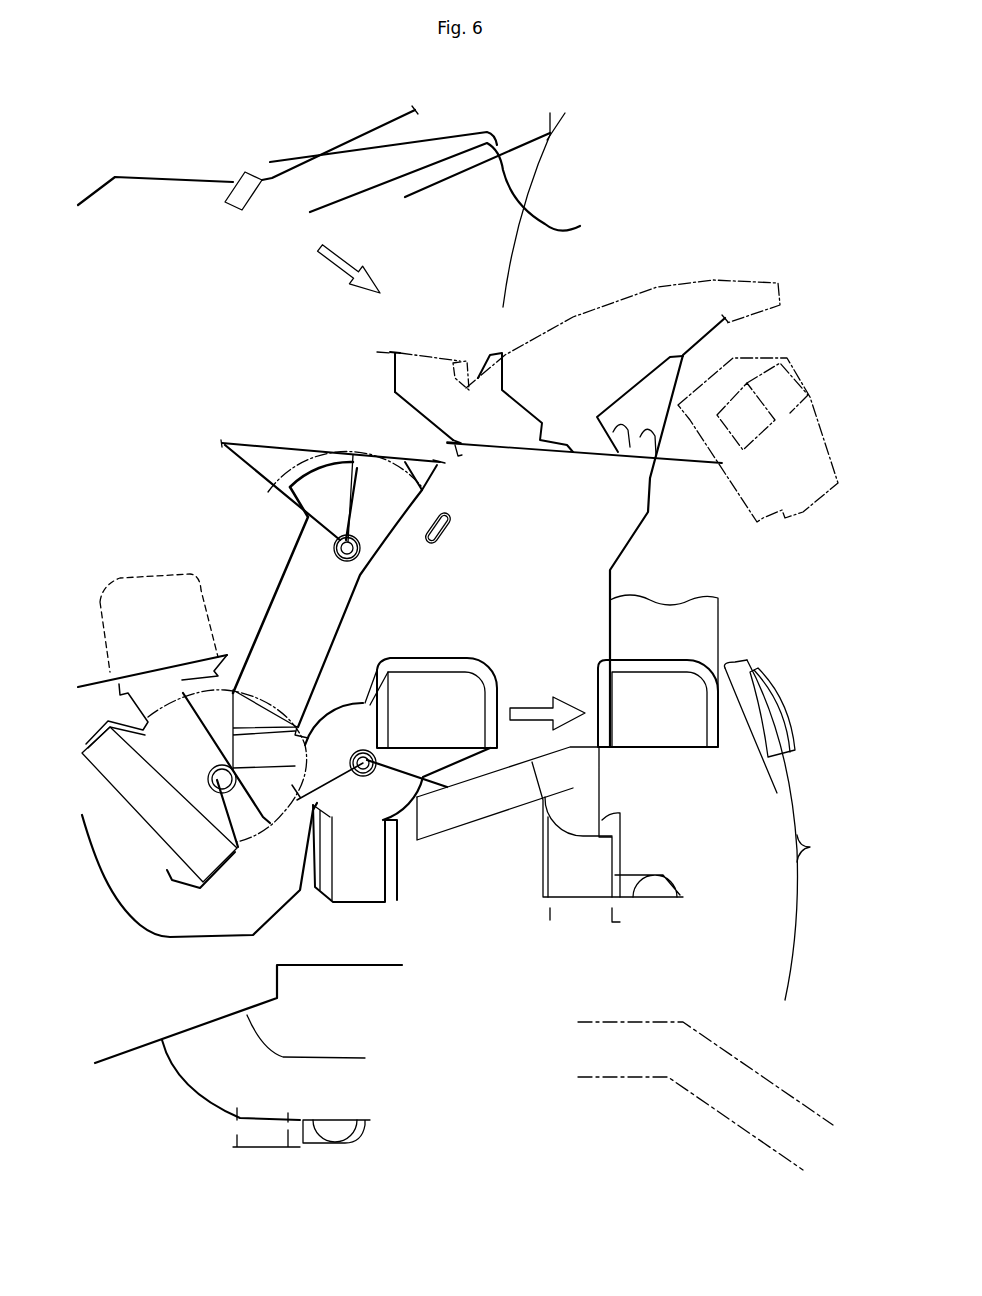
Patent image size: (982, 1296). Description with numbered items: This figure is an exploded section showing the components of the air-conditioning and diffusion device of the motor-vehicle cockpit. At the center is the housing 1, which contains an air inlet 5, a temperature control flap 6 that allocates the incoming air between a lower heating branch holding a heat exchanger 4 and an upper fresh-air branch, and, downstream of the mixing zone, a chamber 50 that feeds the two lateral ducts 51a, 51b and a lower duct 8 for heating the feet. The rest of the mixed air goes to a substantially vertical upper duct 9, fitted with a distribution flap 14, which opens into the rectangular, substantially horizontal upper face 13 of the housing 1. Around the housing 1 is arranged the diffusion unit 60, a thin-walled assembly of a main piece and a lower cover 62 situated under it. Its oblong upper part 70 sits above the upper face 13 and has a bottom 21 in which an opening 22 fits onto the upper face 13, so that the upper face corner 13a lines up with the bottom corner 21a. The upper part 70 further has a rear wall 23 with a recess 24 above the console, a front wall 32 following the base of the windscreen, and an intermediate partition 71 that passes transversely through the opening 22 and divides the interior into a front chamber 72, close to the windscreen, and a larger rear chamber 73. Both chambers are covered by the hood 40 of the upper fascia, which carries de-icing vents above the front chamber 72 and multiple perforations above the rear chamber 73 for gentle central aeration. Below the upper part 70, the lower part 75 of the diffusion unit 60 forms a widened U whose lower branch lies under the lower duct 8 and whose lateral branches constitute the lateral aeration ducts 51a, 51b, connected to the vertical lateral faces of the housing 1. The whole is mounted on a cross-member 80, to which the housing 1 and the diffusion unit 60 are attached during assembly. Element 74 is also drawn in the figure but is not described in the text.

The housing 1 is at (240, 620).
The heat exchanger 4 is at (153, 815).
The air inlet 5 is at (173, 662).
The temperature control flap 6 is at (197, 732).
The lower duct 8 is at (352, 892).
The upper duct 9 is at (298, 577).
The upper face 13 is at (220, 432).
The upper face corner 13a is at (233, 452).
The distribution flap 14 is at (356, 500).
The bottom 21 is at (456, 452).
The bottom corner 21a is at (459, 440).
The opening 22 is at (511, 452).
The rear wall 23 is at (650, 455).
The recess 24 is at (644, 400).
The front wall 32 is at (430, 430).
The hood 40 is at (188, 177).
The chamber 50 is at (401, 739).
The lateral duct 51a is at (705, 626).
The lateral duct 51b is at (705, 626).
The diffusion unit 60 is at (655, 510).
The lower cover 62 is at (218, 1010).
The upper part 70 is at (378, 367).
The intermediate partition 71 is at (520, 400).
The front chamber 72 is at (419, 391).
The rear chamber 73 is at (562, 378).
The steering column 74 is at (347, 135).
The lower part 75 is at (611, 762).
The cross-member 80 is at (452, 522).